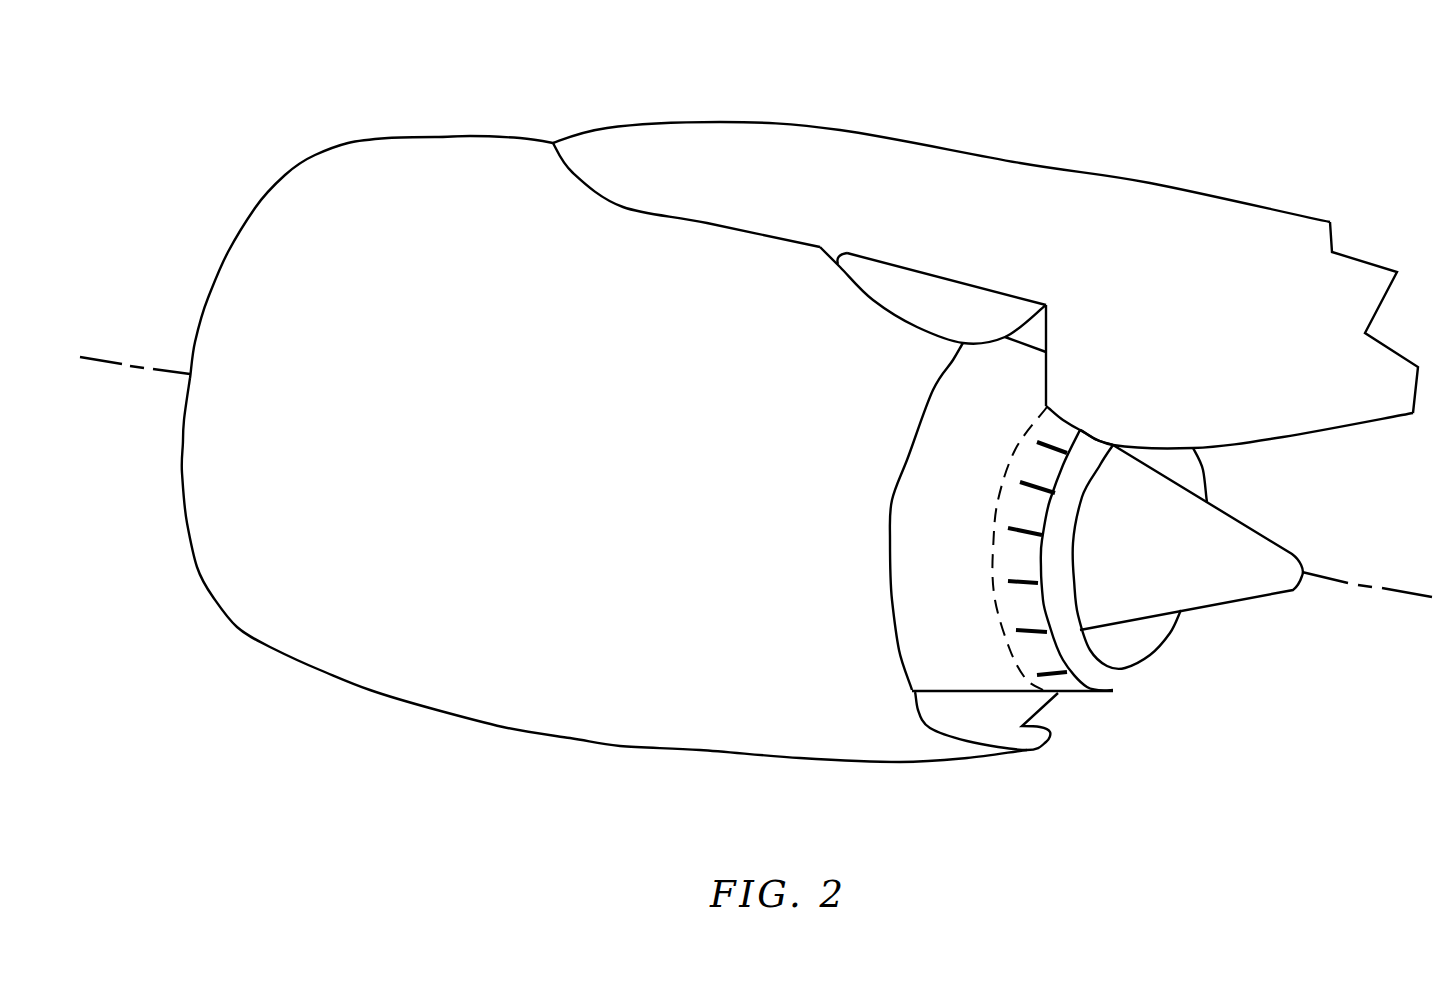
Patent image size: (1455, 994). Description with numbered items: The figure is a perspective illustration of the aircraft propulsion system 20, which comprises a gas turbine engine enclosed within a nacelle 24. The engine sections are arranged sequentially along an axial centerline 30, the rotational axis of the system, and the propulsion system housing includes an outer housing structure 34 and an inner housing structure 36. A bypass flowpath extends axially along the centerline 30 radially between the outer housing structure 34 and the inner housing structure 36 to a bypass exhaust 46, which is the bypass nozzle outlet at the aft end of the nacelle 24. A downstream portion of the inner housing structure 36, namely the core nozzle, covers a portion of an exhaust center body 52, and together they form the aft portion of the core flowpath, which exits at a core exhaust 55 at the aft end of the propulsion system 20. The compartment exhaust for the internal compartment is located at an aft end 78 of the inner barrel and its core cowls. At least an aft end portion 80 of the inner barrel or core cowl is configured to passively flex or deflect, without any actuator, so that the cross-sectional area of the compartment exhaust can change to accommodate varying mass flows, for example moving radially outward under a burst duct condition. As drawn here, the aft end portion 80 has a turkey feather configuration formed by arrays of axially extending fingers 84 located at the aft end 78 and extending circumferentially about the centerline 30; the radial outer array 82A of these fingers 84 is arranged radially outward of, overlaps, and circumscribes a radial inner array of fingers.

The aircraft propulsion system 20 is at (604, 449).
The nacelle 24 is at (500, 126).
The axial centerline 30 is at (1418, 590).
The outer housing structure 34 is at (627, 762).
The inner housing structure 36 is at (977, 709).
The bypass exhaust 46 is at (989, 365).
The exhaust center body 52 is at (1237, 603).
The core exhaust 55 is at (1132, 654).
The aft end 78 is at (1080, 442).
The aft end portion 80 is at (1048, 515).
The radial outer array 82A is at (981, 538).
The fingers 84 is at (1047, 520).